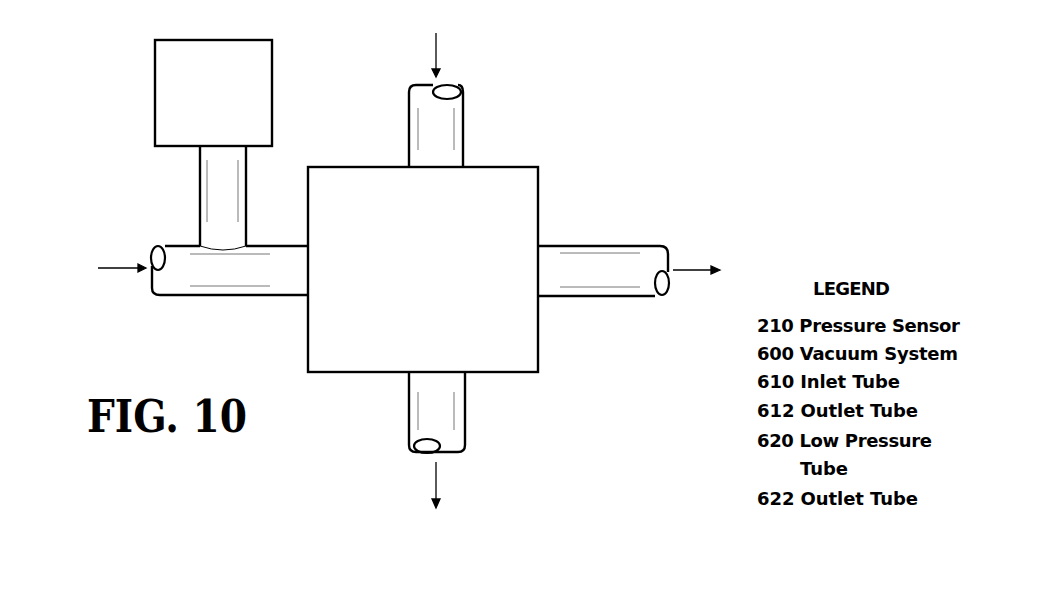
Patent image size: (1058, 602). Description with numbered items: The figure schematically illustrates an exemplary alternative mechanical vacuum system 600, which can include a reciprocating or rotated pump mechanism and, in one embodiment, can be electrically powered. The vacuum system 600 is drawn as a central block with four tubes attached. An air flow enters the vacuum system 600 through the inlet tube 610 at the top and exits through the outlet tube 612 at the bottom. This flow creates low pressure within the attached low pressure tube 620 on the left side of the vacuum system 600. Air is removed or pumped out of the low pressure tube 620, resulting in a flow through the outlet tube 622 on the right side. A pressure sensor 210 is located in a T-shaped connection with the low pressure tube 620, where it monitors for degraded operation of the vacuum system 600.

The pressure sensor 210 is at (155, 107).
The vacuum system 600 is at (538, 205).
The inlet tube 610 is at (463, 130).
The outlet tube 612 is at (409, 400).
The low pressure tube 620 is at (178, 246).
The outlet tube 622 is at (620, 246).